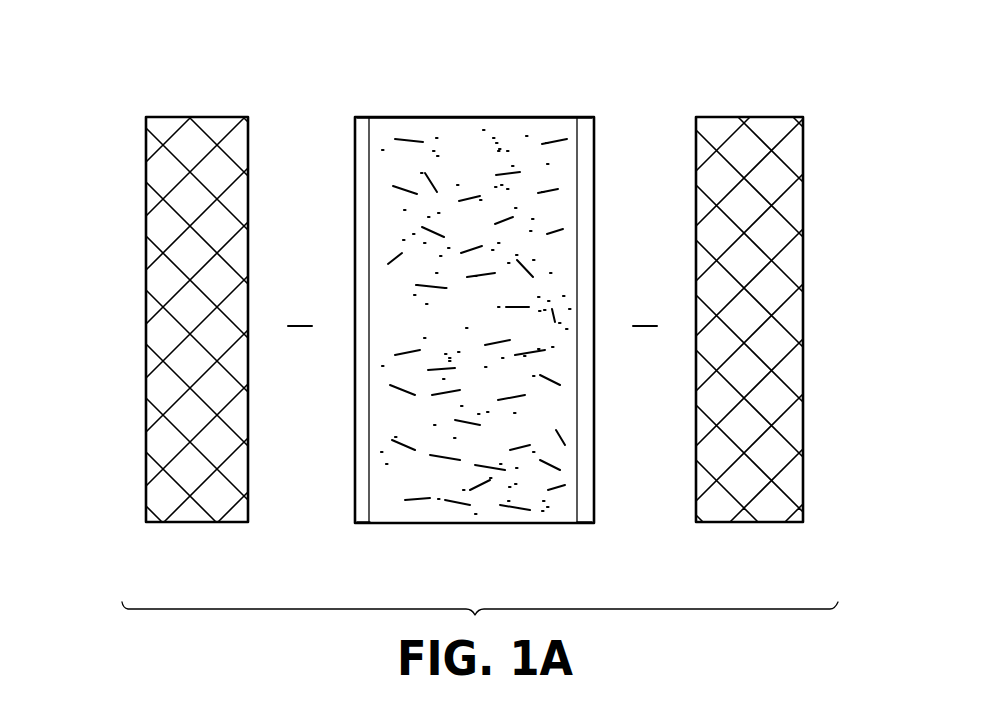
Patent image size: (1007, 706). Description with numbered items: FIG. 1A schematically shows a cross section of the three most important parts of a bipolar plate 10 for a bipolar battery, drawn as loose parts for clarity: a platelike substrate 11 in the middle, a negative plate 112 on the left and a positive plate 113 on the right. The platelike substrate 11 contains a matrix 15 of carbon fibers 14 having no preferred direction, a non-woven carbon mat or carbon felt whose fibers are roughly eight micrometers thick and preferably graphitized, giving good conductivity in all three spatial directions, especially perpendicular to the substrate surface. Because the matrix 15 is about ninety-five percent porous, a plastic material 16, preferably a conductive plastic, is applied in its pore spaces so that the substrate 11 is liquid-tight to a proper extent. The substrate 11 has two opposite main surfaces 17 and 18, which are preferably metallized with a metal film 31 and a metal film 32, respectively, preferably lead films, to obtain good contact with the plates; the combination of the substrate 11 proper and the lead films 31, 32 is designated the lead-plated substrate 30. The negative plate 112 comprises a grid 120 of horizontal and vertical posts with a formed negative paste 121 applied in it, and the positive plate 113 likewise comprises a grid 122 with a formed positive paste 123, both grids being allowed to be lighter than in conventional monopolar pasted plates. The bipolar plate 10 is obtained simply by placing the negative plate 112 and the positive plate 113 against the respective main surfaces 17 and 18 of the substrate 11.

The bipolar plate 10 is at (218, 68).
The platelike substrate 11 is at (472, 525).
The carbon fibers 14 is at (495, 147).
The matrix 15 is at (552, 78).
The plastic material 16 is at (400, 125).
The main surface 17 is at (353, 512).
The main surface 18 is at (593, 502).
The lead-plated substrate 30 is at (678, 80).
The metal film 31 is at (357, 158).
The metal film 32 is at (592, 137).
The negative plate 112 is at (160, 348).
The positive plate 113 is at (782, 337).
The grid 120 is at (172, 303).
The negative paste 121 is at (178, 368).
The grid 122 is at (783, 327).
The positive paste 123 is at (768, 397).